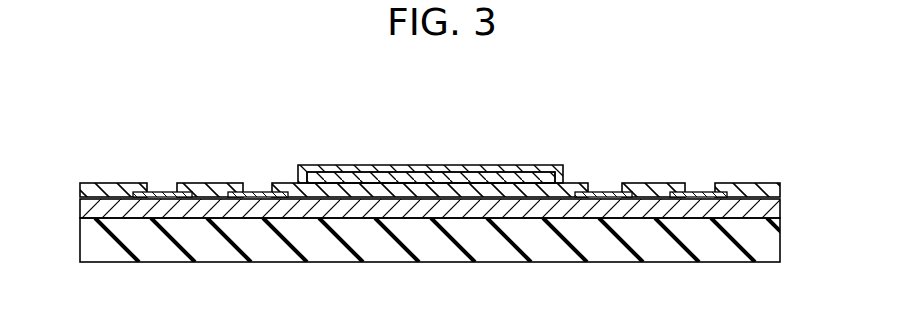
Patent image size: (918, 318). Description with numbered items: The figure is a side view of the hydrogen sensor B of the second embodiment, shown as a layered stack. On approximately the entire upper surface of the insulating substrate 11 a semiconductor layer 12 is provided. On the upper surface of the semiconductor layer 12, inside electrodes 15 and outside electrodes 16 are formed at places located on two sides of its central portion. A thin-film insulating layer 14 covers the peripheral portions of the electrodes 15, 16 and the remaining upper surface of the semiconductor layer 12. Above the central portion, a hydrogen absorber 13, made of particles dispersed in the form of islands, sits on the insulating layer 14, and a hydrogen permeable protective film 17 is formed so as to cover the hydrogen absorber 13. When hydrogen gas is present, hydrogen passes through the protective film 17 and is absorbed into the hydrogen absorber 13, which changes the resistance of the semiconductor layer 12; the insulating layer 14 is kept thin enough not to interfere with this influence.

The insulating substrate 11 is at (779, 243).
The semiconductor layer 12 is at (779, 205).
The hydrogen absorber 13 is at (499, 178).
The thin-film insulating layer 14 is at (462, 187).
The inside electrode 15 is at (262, 185).
The outside electrode 16 is at (168, 185).
The hydrogen permeable protective film 17 is at (528, 170).
The hydrogen sensor B is at (430, 138).